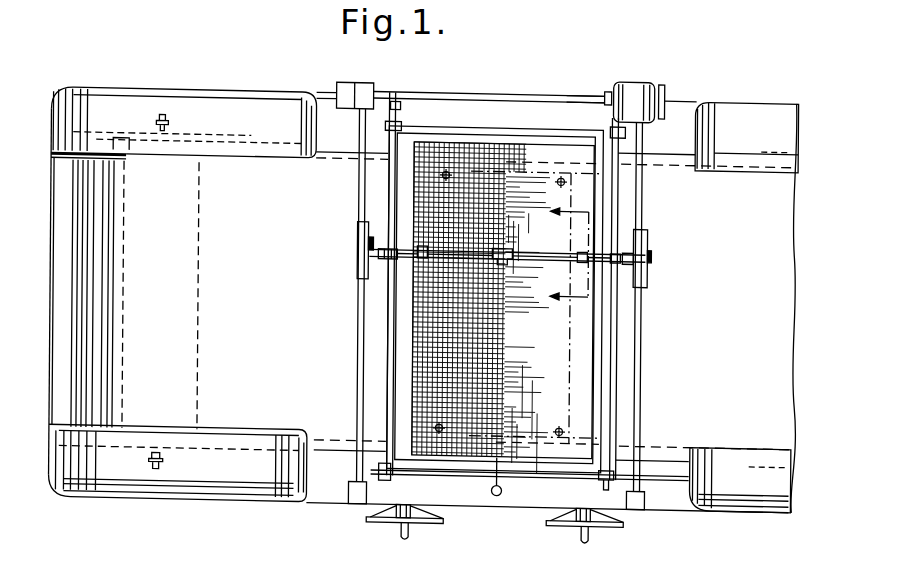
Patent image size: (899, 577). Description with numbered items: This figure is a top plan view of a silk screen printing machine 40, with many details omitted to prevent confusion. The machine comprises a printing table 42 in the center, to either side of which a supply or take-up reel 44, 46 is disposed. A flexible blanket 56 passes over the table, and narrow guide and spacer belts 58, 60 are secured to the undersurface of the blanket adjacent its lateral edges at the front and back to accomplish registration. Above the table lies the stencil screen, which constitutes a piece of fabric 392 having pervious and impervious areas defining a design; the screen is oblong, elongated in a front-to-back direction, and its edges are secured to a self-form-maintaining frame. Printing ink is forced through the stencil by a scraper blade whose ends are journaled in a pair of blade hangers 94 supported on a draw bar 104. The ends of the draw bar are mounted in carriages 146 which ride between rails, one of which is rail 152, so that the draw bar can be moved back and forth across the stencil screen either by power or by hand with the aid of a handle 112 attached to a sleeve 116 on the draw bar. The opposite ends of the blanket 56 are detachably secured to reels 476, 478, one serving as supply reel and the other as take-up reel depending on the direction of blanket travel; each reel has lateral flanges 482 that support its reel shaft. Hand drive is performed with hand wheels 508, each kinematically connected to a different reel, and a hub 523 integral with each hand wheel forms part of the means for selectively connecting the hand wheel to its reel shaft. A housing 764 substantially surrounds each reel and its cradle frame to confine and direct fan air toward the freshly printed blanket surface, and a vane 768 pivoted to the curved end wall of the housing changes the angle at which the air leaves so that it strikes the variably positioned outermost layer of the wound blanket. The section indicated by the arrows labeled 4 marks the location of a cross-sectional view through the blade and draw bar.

The silk screen printing machine 40 is at (182, 514).
The printing table 42 is at (551, 86).
The supply or take-up reel 44 is at (213, 80).
The supply or take-up reel 46 is at (751, 92).
The blanket 56 is at (335, 449).
The guide and spacer belt 58 is at (675, 457).
The guide and spacer belt 60 is at (332, 162).
The blade hanger 94 is at (417, 253).
The draw bar 104 is at (543, 259).
The handle 112 is at (500, 378).
The sleeve 116 is at (500, 246).
The carriage 146 is at (357, 251).
The rail 152 is at (358, 386).
The fabric 392 is at (414, 337).
The reel 476 is at (199, 304).
The reel 478 is at (772, 457).
The lateral flange 482 is at (232, 131).
The hand wheel 508 is at (380, 524).
The hub 523 is at (415, 516).
The housing 764 is at (265, 501).
The vane 768 is at (52, 395).
The section line 4- 4 is at (563, 254).